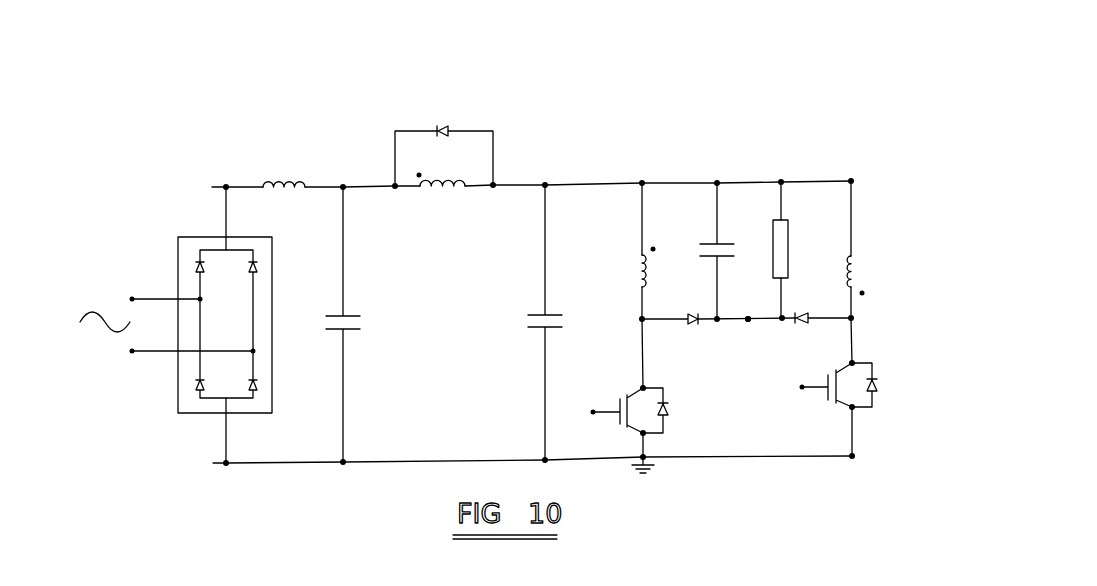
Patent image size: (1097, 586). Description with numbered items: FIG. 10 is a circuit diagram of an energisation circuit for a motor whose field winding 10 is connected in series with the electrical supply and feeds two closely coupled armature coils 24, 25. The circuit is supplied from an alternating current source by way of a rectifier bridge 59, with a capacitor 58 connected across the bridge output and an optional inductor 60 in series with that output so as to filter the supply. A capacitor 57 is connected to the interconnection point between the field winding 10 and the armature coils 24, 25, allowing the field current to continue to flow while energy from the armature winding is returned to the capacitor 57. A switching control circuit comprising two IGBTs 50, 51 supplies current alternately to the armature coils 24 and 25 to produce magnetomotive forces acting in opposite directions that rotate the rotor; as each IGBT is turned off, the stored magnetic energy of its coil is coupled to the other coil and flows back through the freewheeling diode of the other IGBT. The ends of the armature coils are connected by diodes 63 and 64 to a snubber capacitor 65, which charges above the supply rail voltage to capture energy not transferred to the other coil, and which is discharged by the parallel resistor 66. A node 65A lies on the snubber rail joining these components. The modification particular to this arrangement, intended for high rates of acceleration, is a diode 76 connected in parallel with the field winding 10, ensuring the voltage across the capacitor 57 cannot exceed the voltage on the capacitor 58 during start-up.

The field winding 10 is at (440, 189).
The armature coil 24 is at (640, 278).
The armature coil 25 is at (853, 258).
The IGBT 50 is at (620, 400).
The IGBT 51 is at (823, 395).
The capacitor 57 is at (537, 333).
The capacitor 58 is at (350, 332).
The rectifier bridge 59 is at (175, 276).
The inductor 60 is at (272, 185).
The diode 63 is at (695, 323).
The diode 64 is at (805, 322).
The snubber capacitor 65 is at (700, 244).
The node 65A is at (748, 322).
The resistor 66 is at (789, 248).
The diode 76 is at (446, 126).